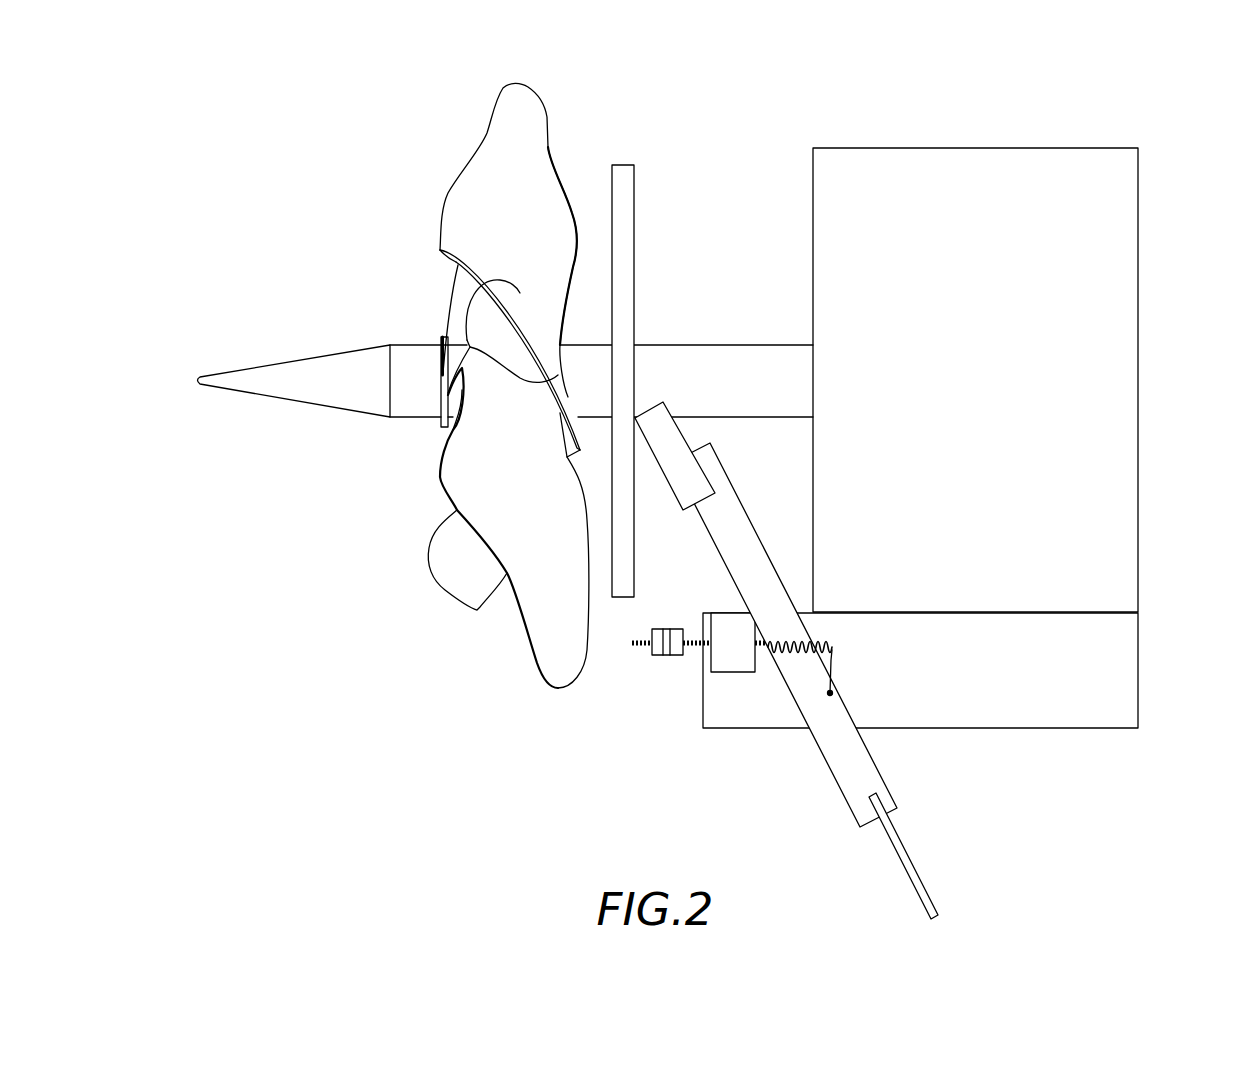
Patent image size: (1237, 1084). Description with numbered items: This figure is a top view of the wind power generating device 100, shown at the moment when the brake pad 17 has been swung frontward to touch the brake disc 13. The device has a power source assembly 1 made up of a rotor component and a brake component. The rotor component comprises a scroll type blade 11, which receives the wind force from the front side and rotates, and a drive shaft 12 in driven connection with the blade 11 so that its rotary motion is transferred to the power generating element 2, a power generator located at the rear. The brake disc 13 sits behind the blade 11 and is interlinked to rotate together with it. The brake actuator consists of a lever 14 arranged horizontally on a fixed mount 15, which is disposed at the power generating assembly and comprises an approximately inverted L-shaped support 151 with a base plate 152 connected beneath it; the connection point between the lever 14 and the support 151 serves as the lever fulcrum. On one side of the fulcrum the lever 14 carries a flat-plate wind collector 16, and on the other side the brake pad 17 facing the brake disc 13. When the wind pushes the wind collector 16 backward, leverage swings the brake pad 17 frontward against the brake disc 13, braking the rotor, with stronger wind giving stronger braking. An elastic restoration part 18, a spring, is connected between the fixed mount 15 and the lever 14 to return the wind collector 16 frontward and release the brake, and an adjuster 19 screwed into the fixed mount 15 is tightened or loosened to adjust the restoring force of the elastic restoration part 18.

The wind power generating device 100 is at (221, 141).
The power source assembly 1 is at (563, 665).
The blade 11 is at (462, 577).
The drive shaft 12 is at (753, 363).
The brake disc 13 is at (625, 170).
The lever 14 is at (858, 763).
The fixed mount 15 is at (914, 723).
The support 151 is at (732, 665).
The base plate 152 is at (779, 710).
The wind collector 16 is at (913, 873).
The brake pad 17 is at (662, 423).
The elastic restoration part 18 is at (833, 663).
The adjuster 19 is at (665, 655).
The power generating element 2 is at (1138, 357).